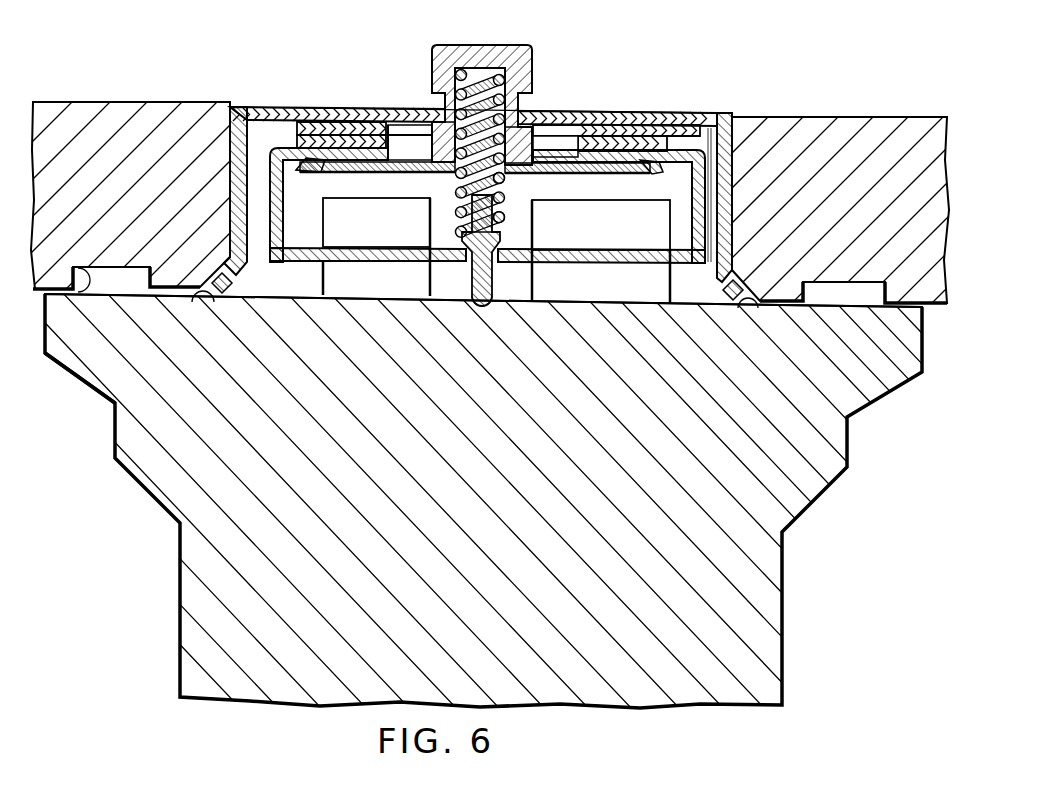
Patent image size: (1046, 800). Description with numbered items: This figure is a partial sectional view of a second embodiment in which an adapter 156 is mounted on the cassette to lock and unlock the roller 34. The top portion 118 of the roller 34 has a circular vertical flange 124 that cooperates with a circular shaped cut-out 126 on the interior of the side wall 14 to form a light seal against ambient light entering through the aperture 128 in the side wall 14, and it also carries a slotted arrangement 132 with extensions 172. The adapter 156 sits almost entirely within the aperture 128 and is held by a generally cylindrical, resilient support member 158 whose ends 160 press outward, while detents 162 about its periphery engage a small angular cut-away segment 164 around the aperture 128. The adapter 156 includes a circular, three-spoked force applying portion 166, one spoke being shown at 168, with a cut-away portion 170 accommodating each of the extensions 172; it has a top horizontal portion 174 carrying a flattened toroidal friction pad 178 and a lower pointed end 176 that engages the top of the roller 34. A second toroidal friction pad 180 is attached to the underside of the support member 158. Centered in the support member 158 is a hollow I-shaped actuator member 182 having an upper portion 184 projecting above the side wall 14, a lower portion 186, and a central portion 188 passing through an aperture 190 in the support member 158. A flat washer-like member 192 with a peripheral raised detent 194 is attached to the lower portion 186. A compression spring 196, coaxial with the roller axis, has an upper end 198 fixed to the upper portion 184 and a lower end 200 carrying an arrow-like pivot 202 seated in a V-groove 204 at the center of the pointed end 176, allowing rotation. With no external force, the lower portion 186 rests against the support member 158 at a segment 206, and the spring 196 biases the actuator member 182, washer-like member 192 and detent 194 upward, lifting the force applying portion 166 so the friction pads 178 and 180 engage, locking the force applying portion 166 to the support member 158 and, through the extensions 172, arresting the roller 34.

The side wall 14 is at (80, 112).
The roller 34 is at (478, 510).
The top portion 118 is at (108, 397).
The circular vertical flange 124 is at (113, 283).
The circular shaped cut-out 126 is at (80, 300).
The aperture 128 is at (708, 175).
The slotted arrangement 132 is at (351, 288).
The adapter 156 is at (358, 75).
The support member 158 is at (244, 113).
The ends 160 is at (240, 247).
The detents 162 is at (233, 283).
The angular cut-away segment 164 is at (210, 297).
The force applying portion 166 is at (266, 213).
The spoke 168 is at (362, 262).
The cut-away portion 170 is at (552, 253).
The extensions 172 is at (390, 232).
The top horizontal portion 174 is at (345, 145).
The lower pointed end 176 is at (482, 300).
The friction pad 178 is at (310, 130).
The second friction pad 180 is at (383, 120).
The actuator member 182 is at (557, 70).
The upper portion 184 is at (505, 52).
The lower portion 186 is at (442, 150).
The central portion 188 is at (447, 110).
The aperture 190 is at (520, 110).
The washer-like member 192 is at (378, 170).
The peripheral raised detent 194 is at (302, 166).
The compression spring 196 is at (500, 178).
The upper end 198 is at (478, 75).
The lower end 200 is at (505, 226).
The pivot 202 is at (500, 246).
The V-groove 204 is at (492, 260).
The segment 206 is at (582, 168).